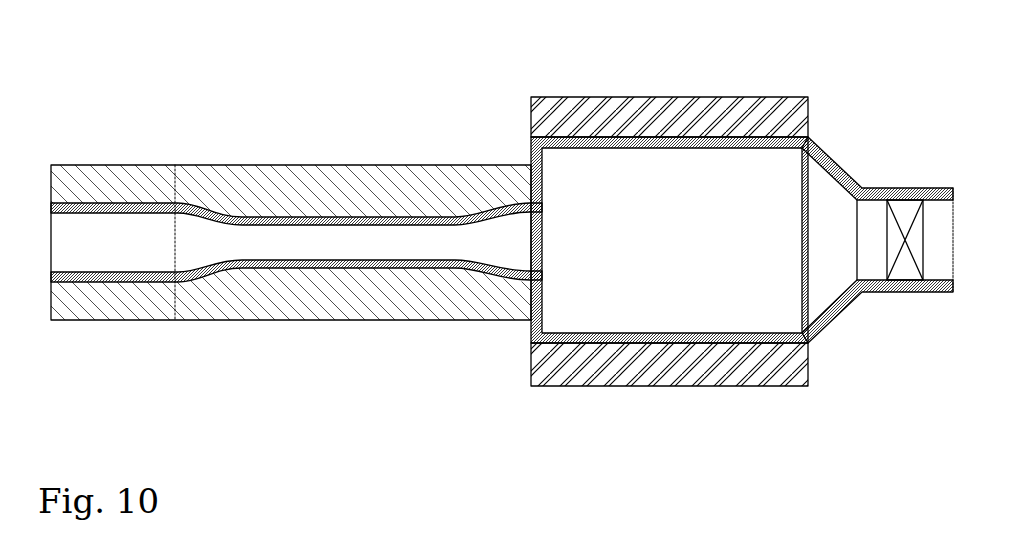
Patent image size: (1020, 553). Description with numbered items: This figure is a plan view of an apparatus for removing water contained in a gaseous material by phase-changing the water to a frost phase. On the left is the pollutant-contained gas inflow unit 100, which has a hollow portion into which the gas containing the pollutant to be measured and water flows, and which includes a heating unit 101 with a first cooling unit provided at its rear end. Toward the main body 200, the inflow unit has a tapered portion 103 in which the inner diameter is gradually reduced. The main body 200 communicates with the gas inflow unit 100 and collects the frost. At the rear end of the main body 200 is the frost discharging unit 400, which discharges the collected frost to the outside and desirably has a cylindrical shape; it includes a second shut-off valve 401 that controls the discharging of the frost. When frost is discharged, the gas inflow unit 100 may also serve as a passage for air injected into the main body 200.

The pollutant-contained gas inflow unit 100 is at (296, 241).
The heating unit 101 is at (138, 308).
The tapered portion 103 is at (342, 251).
The main body 200 is at (638, 96).
The frost discharging unit 400 is at (877, 236).
The second shut-off valve 401 is at (902, 272).